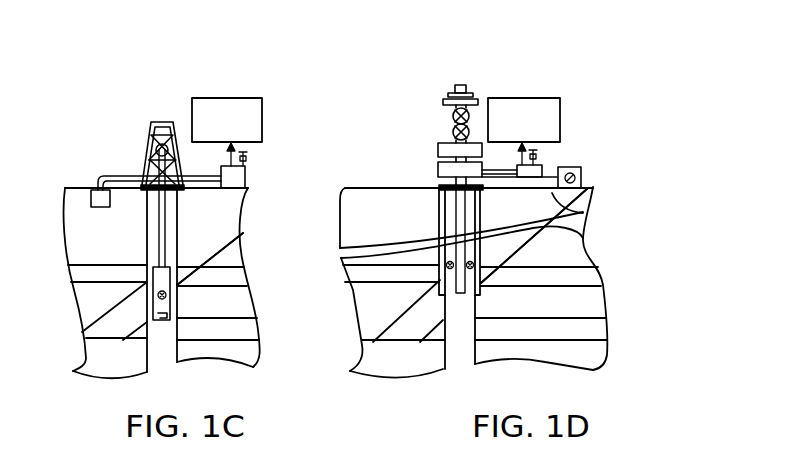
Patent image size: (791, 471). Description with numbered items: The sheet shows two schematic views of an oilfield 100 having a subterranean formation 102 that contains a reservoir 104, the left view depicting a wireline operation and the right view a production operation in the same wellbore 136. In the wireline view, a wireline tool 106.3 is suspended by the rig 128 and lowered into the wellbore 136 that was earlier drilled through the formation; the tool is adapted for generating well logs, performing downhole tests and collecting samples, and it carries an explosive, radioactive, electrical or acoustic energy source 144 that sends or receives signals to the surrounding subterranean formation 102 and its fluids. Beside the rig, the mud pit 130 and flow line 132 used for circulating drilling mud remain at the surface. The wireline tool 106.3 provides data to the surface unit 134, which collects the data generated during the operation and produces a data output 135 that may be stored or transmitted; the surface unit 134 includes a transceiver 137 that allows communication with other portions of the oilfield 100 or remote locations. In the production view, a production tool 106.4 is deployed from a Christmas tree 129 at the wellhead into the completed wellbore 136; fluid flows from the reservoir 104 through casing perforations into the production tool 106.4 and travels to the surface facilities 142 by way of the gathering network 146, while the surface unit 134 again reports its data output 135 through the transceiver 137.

In FIG. 1C, the oilfield 100 is at (134, 122).
In FIG. 1D, the oilfield 100 is at (414, 142).
In FIG. 1C, the subterranean formation 102 is at (190, 267).
In FIG. 1D, the subterranean formation 102 is at (519, 245).
In FIG. 1C, the reservoir 104 is at (226, 309).
In FIG. 1D, the reservoir 104 is at (543, 307).
In FIG. 1C, the wireline tool 106.3 is at (153, 307).
In FIG. 1D, the production tool 106.4 is at (444, 276).
In FIG. 1C, the rig 128 is at (146, 141).
In FIG. 1D, the Christmas tree 129 is at (467, 88).
In FIG. 1C, the mud pit 130 is at (101, 209).
In FIG. 1C, the flow line 132 is at (98, 180).
In FIG. 1C, the surface unit 134 is at (247, 183).
In FIG. 1D, the surface unit 134 is at (518, 165).
In FIG. 1C, the data output 135 is at (231, 97).
In FIG. 1D, the data output 135 is at (561, 120).
In FIG. 1C, the wellbore 136 is at (178, 218).
In FIG. 1D, the wellbore 136 is at (464, 218).
In FIG. 1C, the transceiver 137 is at (247, 160).
In FIG. 1D, the transceiver 137 is at (540, 165).
In FIG. 1D, the surface facilities 142 is at (582, 178).
In FIG. 1C, the energy source 144 is at (172, 319).
In FIG. 1D, the gathering network 146 is at (584, 215).